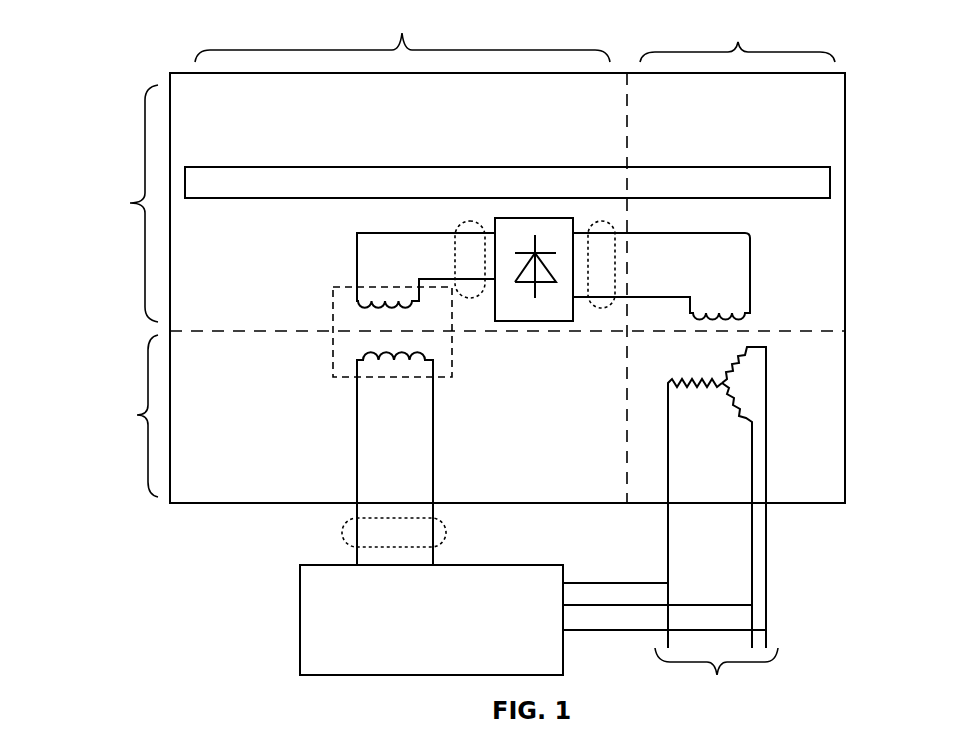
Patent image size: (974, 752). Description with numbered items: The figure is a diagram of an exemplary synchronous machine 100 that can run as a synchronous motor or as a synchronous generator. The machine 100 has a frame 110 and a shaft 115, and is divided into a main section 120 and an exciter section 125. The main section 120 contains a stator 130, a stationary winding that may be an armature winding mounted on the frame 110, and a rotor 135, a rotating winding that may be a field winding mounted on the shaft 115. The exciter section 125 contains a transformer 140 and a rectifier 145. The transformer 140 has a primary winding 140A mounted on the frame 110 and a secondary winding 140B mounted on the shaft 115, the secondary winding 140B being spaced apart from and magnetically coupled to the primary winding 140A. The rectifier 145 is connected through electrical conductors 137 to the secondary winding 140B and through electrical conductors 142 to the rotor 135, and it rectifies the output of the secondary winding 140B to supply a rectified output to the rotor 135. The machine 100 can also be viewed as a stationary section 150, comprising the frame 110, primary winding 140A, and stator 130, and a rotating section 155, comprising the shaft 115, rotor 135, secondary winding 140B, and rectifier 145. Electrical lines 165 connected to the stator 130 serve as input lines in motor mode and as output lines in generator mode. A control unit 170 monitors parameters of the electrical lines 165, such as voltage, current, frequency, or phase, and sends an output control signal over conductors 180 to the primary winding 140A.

The synchronous machine 100 is at (898, 130).
The frame 110 is at (245, 510).
The shaft 115 is at (507, 182).
The main section 120 is at (737, 36).
The exciter section 125 is at (411, 254).
The stator 130 is at (722, 399).
The rotor 135 is at (718, 307).
The electrical conductors 137 is at (470, 219).
The transformer 140 is at (328, 379).
The primary winding 140A is at (356, 354).
The secondary winding 140B is at (356, 309).
The electrical conductors 142 is at (601, 219).
The rectifier 145 is at (521, 325).
The stationary section 150 is at (129, 416).
The rotating section 155 is at (468, 208).
The electrical lines 165 is at (716, 677).
The control unit 170 is at (532, 620).
The conductors 180 is at (339, 530).